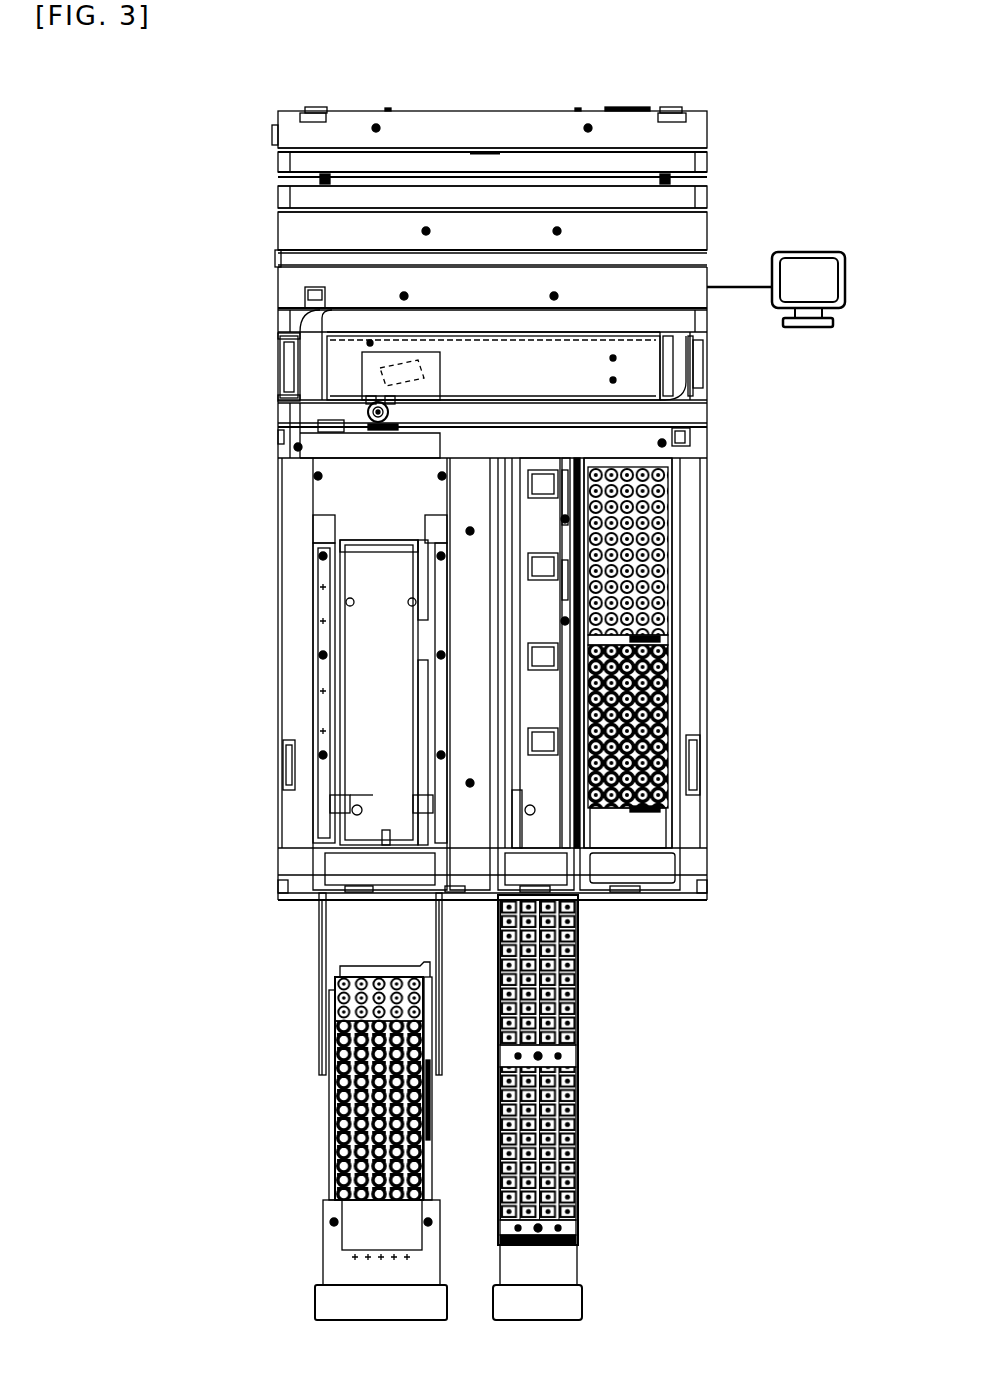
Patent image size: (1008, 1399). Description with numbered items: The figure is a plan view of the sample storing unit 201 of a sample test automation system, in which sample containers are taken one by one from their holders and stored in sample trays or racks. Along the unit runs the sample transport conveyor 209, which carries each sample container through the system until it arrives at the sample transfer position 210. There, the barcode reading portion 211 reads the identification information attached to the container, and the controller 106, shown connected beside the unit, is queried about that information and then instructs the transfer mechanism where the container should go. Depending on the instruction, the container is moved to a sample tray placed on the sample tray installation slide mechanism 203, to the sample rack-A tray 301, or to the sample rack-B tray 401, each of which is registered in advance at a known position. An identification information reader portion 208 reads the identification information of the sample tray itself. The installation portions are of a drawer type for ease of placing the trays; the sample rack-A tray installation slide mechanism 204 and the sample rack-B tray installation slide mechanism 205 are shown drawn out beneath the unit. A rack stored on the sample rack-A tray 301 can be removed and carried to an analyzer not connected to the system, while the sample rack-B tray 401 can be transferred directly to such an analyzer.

The sample storing unit 201 is at (707, 137).
The barcode reading portion 211 is at (420, 372).
The sample transfer position 210 is at (370, 412).
The sample transport conveyor 209 is at (290, 412).
The controller 106 is at (808, 327).
The identification information reader portion 208 is at (540, 490).
The sample tray installation slide mechanism 203 is at (637, 870).
The sample rack-A tray 301 is at (578, 993).
The sample rack-B tray 401 is at (340, 1112).
The sample rack-A tray installation slide mechanism 204 is at (562, 1304).
The sample rack-B tray installation slide mechanism 205 is at (322, 1303).